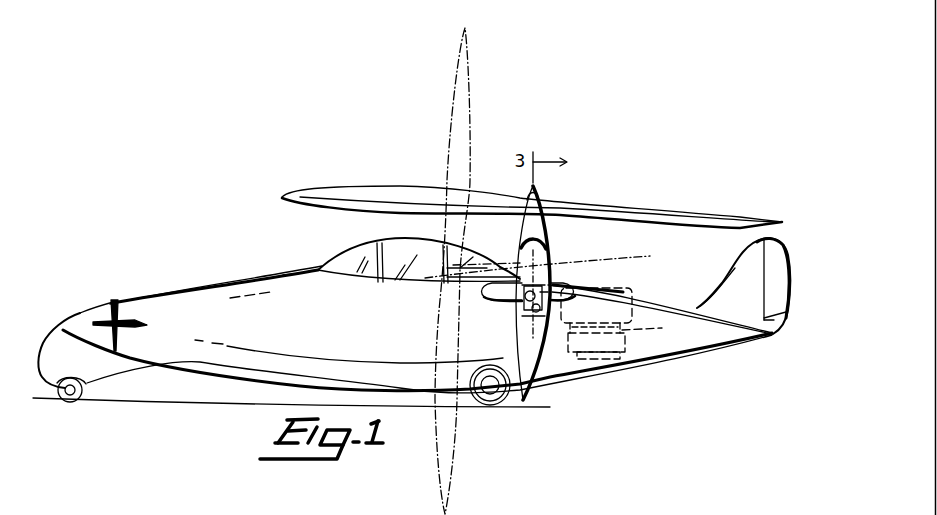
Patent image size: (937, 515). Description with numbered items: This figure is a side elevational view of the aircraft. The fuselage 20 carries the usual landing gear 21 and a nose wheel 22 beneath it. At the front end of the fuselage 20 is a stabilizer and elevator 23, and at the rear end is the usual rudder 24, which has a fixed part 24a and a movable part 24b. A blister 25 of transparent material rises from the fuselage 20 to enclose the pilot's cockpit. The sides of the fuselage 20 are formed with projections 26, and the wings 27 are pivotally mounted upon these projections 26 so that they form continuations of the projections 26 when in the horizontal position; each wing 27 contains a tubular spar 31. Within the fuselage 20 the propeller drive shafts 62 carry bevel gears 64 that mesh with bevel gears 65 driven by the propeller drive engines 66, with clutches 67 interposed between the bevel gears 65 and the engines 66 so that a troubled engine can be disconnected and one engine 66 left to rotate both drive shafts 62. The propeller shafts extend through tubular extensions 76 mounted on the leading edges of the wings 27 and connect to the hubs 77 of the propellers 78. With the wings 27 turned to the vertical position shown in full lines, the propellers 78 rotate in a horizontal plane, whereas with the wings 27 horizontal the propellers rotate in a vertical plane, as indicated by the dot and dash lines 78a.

The fuselage 20 is at (293, 302).
The landing gear 21 is at (499, 393).
The nose wheel 22 is at (70, 402).
The stabilizer and elevator 23 is at (116, 301).
The rudder 24 is at (731, 256).
The fixed part of rudder 24a is at (735, 281).
The movable part of rudder 24b is at (773, 312).
The blister 25 is at (355, 260).
The projections 26 is at (628, 292).
The wings 27 is at (557, 380).
The tubular spar 31 is at (538, 272).
The propeller drive shafts 62 is at (507, 300).
The bevel gears 64 is at (520, 316).
The bevel gears 65 is at (566, 312).
The propeller drive engines 66 is at (640, 329).
The clutches 67 is at (550, 287).
The tubular extensions 76 is at (530, 229).
The hubs 77 is at (538, 203).
The propellers 78 is at (677, 217).
The propellers in vertical plane (dot and dash lines) 78a is at (452, 132).